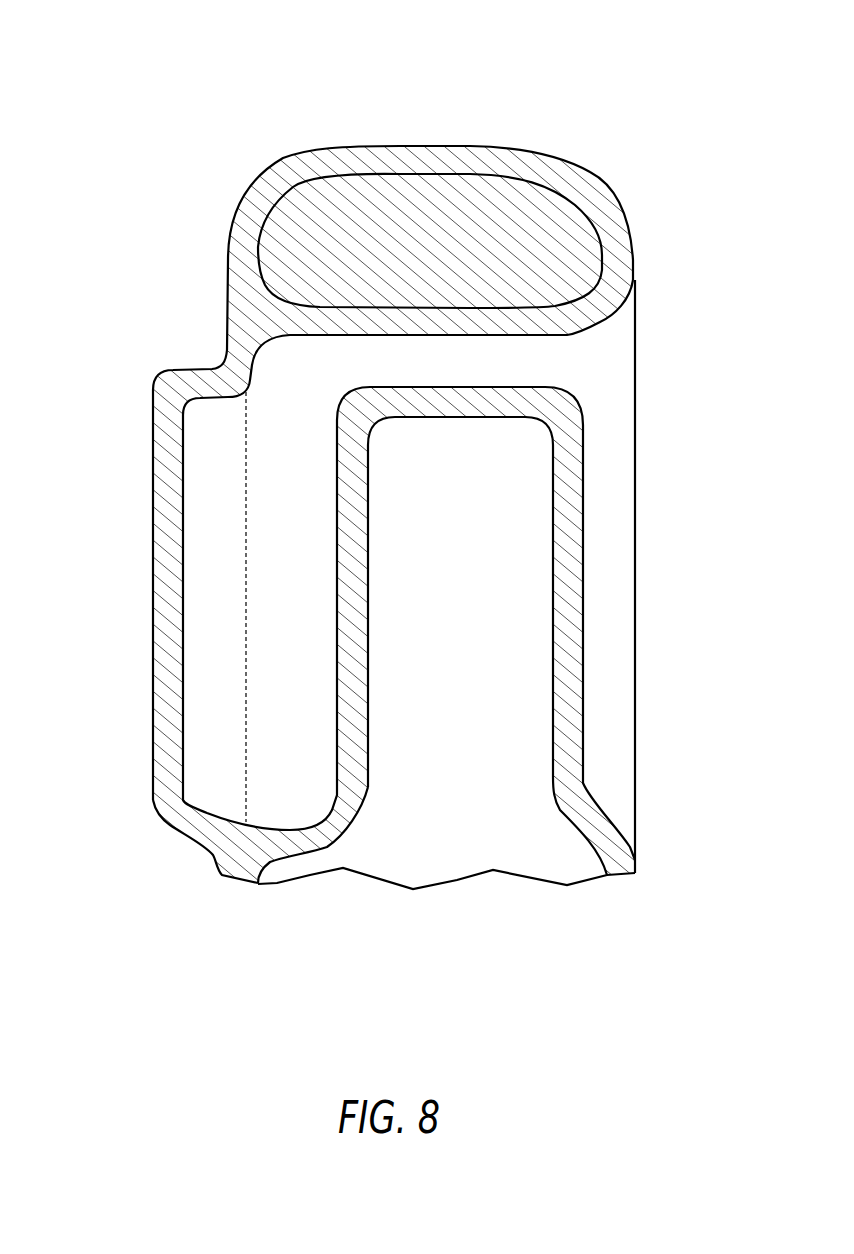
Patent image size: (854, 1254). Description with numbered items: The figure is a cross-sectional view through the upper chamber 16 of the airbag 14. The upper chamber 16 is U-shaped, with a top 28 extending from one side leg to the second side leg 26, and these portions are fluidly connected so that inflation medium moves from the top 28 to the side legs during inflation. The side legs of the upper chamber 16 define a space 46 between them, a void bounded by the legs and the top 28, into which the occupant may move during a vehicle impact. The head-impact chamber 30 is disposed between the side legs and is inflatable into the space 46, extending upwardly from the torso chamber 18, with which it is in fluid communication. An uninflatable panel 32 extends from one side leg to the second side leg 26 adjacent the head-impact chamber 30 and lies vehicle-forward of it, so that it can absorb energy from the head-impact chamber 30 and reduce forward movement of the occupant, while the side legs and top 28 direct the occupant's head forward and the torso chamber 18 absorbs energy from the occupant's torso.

The airbag 14 is at (123, 207).
The upper chamber 16 is at (604, 186).
The torso chamber 18 is at (380, 852).
The second side leg 26 is at (617, 720).
The top 28 is at (430, 144).
The head-impact chamber 30 is at (585, 500).
The uninflatable panel 32 is at (152, 486).
The space 46 is at (612, 580).